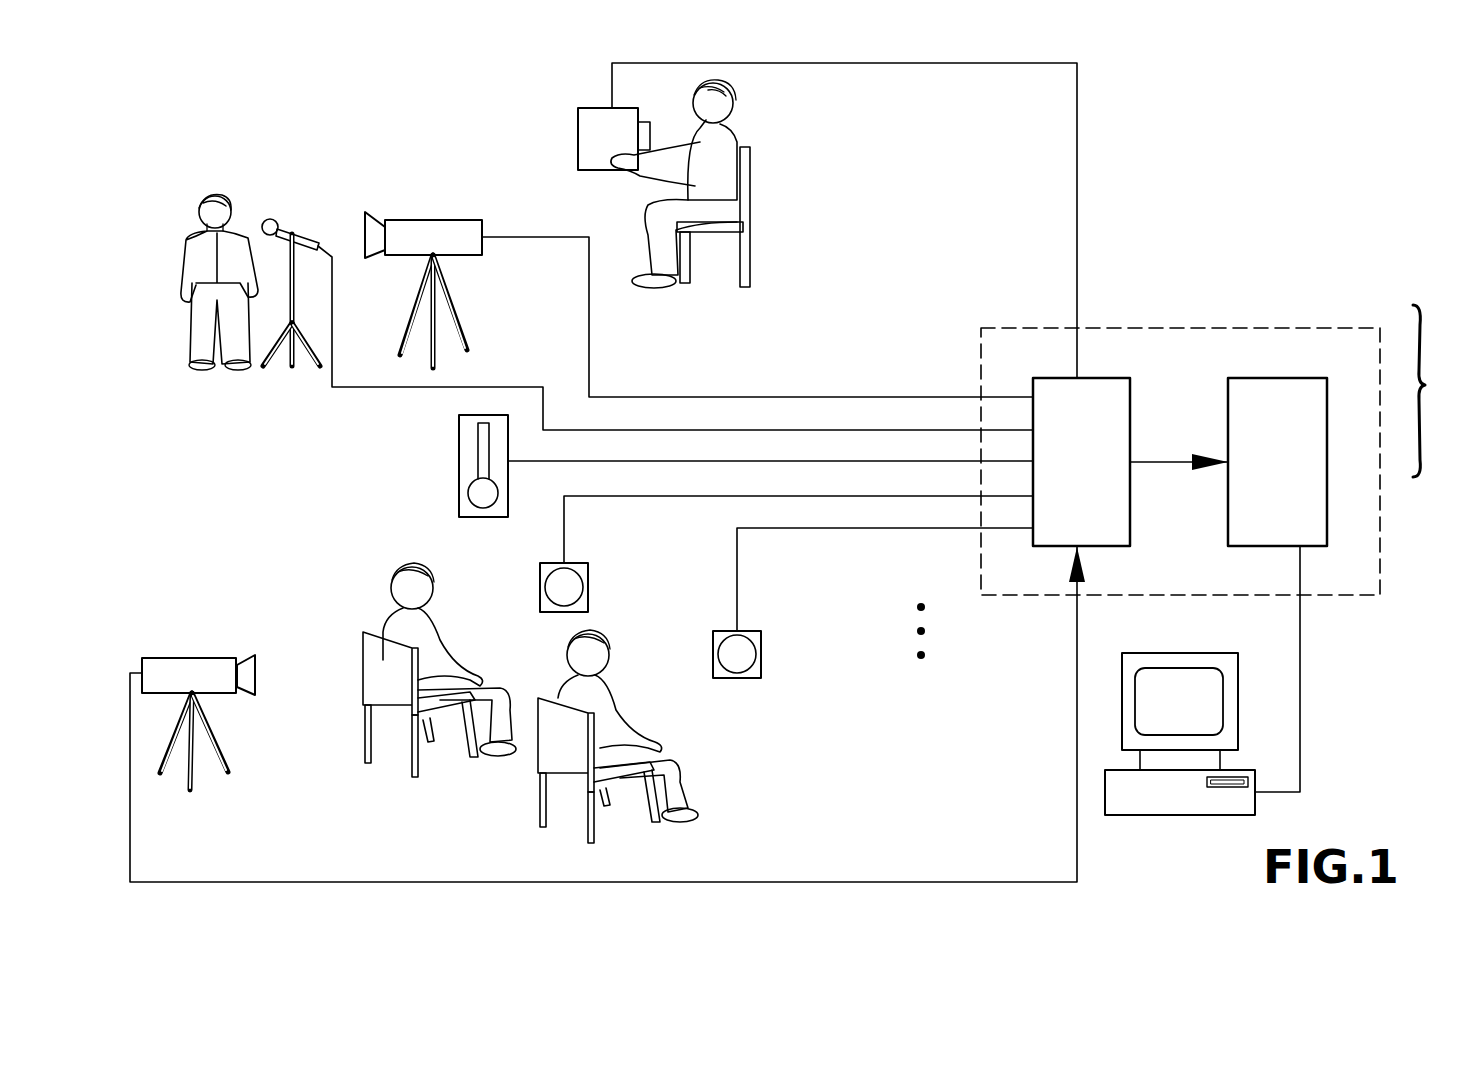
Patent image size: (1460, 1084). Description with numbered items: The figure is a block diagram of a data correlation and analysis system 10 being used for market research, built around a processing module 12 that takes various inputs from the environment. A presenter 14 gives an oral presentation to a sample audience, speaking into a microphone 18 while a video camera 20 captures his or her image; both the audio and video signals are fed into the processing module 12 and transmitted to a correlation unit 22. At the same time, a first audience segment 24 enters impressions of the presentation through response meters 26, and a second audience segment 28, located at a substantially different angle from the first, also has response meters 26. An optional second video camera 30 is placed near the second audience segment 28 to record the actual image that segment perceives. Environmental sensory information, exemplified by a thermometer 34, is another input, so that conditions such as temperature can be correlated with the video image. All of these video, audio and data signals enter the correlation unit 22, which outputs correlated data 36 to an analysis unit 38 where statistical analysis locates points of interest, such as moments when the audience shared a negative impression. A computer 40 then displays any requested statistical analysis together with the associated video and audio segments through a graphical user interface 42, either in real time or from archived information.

The data correlation and analysis system 10 is at (1434, 391).
The processing module 12 is at (1357, 582).
The presenter 14 is at (244, 182).
The microphone 18 is at (284, 230).
The video camera 20 is at (437, 226).
The correlation unit 22 is at (1117, 532).
The audience segment 24 is at (778, 162).
The response meters 26 is at (578, 130).
The second audience segment 28 is at (508, 808).
The second video camera 30 is at (203, 665).
The thermometer 34 is at (459, 442).
The correlated data 36 is at (1156, 460).
The analysis unit 38 is at (1314, 532).
The computer 40 is at (1157, 803).
The graphical user interface 42 is at (1160, 678).